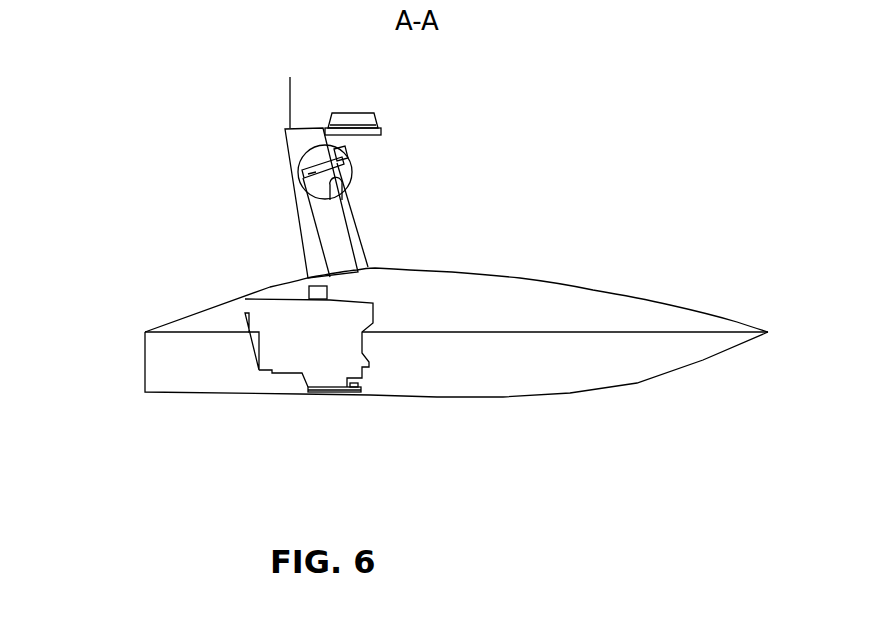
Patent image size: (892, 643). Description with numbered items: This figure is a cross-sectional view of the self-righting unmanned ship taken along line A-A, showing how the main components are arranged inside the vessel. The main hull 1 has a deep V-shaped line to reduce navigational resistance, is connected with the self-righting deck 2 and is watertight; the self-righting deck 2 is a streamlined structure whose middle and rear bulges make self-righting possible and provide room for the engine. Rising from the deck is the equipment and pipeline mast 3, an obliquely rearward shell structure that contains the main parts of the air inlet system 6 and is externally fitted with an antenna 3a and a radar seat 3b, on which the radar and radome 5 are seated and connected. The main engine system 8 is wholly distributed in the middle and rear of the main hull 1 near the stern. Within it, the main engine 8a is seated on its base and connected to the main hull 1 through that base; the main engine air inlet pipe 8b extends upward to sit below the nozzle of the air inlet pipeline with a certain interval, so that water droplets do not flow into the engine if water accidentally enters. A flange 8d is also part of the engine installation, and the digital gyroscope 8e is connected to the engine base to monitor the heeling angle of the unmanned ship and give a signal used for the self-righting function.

The main hull 1 is at (145, 392).
The self-righting deck 2 is at (452, 272).
The equipment and pipeline mast 3 is at (284, 178).
The antenna 3a is at (290, 77).
The radar seat 3b is at (381, 134).
The radar and radome 5 is at (355, 113).
The air inlet system 6 is at (347, 177).
The main engine system 8 is at (240, 307).
The main engine 8a is at (293, 357).
The main engine air inlet pipe 8b is at (320, 293).
The flange 8d is at (358, 390).
The digital gyroscope 8e is at (315, 393).